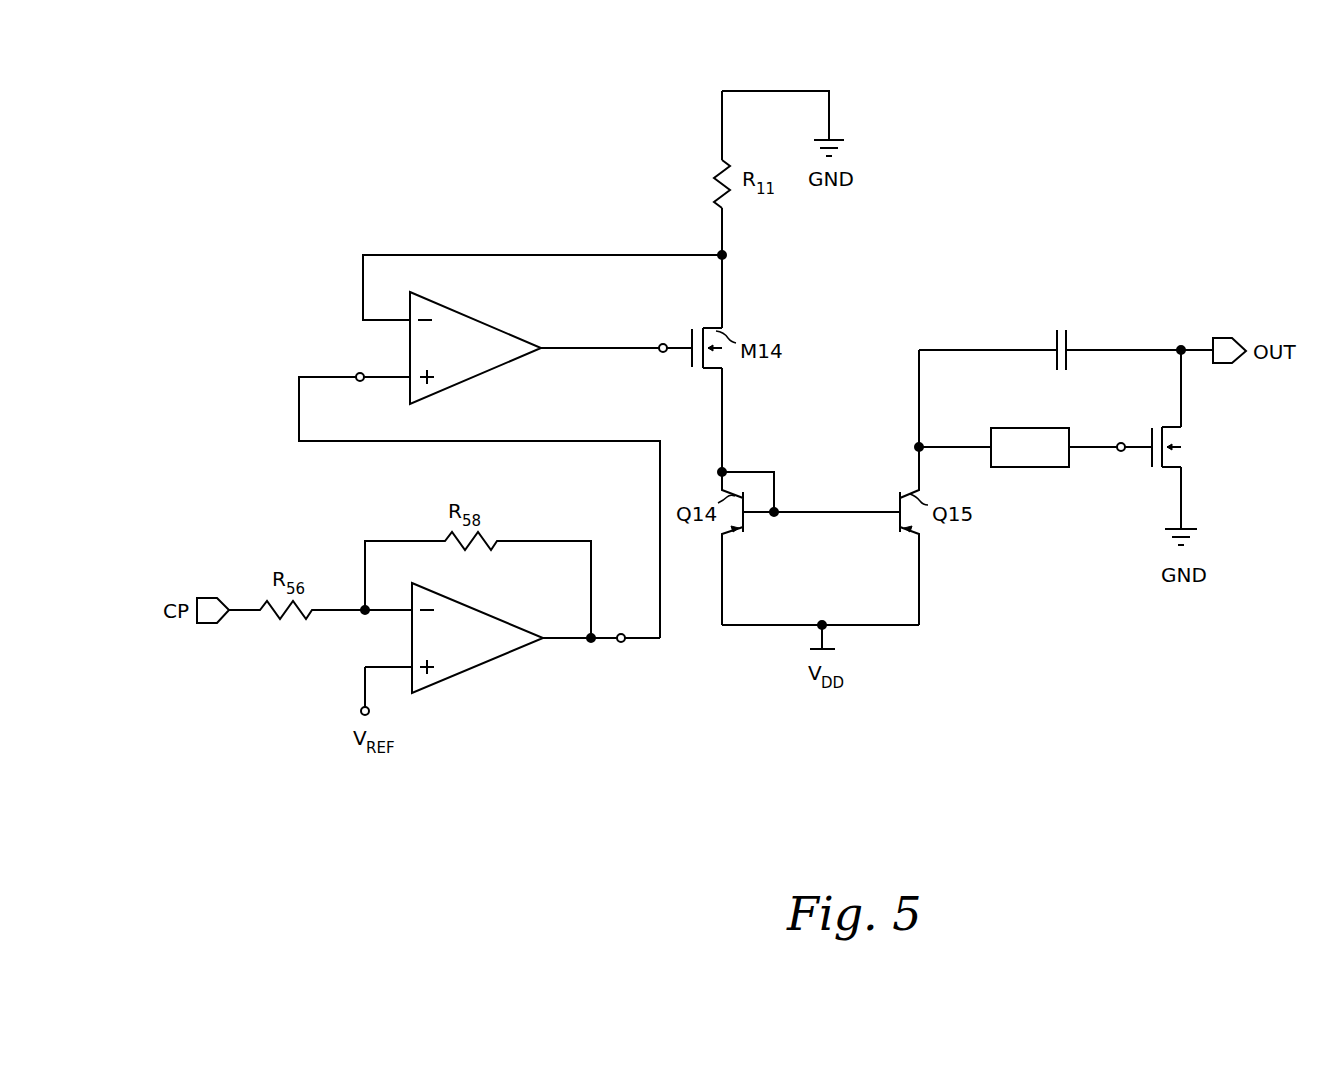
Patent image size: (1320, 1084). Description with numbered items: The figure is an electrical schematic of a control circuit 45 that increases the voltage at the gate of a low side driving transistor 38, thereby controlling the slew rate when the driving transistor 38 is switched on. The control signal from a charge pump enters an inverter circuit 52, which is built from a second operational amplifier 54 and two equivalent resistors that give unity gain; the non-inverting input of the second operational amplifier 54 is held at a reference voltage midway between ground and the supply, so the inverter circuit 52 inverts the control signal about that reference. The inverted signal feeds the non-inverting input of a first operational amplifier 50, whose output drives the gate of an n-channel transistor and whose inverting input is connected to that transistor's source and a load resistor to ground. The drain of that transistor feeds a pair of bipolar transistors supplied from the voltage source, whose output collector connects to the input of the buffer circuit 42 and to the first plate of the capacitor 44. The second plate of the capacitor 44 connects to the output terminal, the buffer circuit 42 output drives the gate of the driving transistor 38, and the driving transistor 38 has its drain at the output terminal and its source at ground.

The driving transistor 38 is at (1178, 428).
The buffer circuit 42 is at (1030, 468).
The capacitor 44 is at (1068, 342).
The control circuit 45 is at (1120, 710).
The first operational amplifier 50 is at (478, 382).
The inverter circuit 52 is at (566, 759).
The second operational amplifier 54 is at (478, 670).